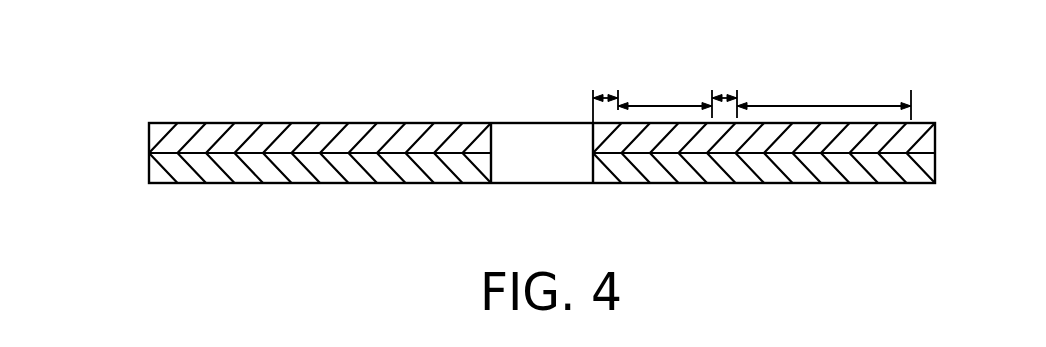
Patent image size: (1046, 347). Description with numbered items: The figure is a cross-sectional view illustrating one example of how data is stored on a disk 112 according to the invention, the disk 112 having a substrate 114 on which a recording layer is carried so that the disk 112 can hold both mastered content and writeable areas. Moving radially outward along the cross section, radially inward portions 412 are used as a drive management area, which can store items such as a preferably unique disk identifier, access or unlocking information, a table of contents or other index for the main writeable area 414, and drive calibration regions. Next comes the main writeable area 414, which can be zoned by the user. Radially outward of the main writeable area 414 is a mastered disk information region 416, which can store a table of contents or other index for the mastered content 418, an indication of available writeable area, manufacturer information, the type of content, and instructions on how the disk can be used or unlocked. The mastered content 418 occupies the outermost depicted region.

The disk 112 is at (131, 208).
The substrate 114 is at (149, 168).
The radially inward portions 412 is at (605, 97).
The main writeable area 414 is at (657, 106).
The mastered disk information region 416 is at (724, 98).
The mastered content 418 is at (821, 106).